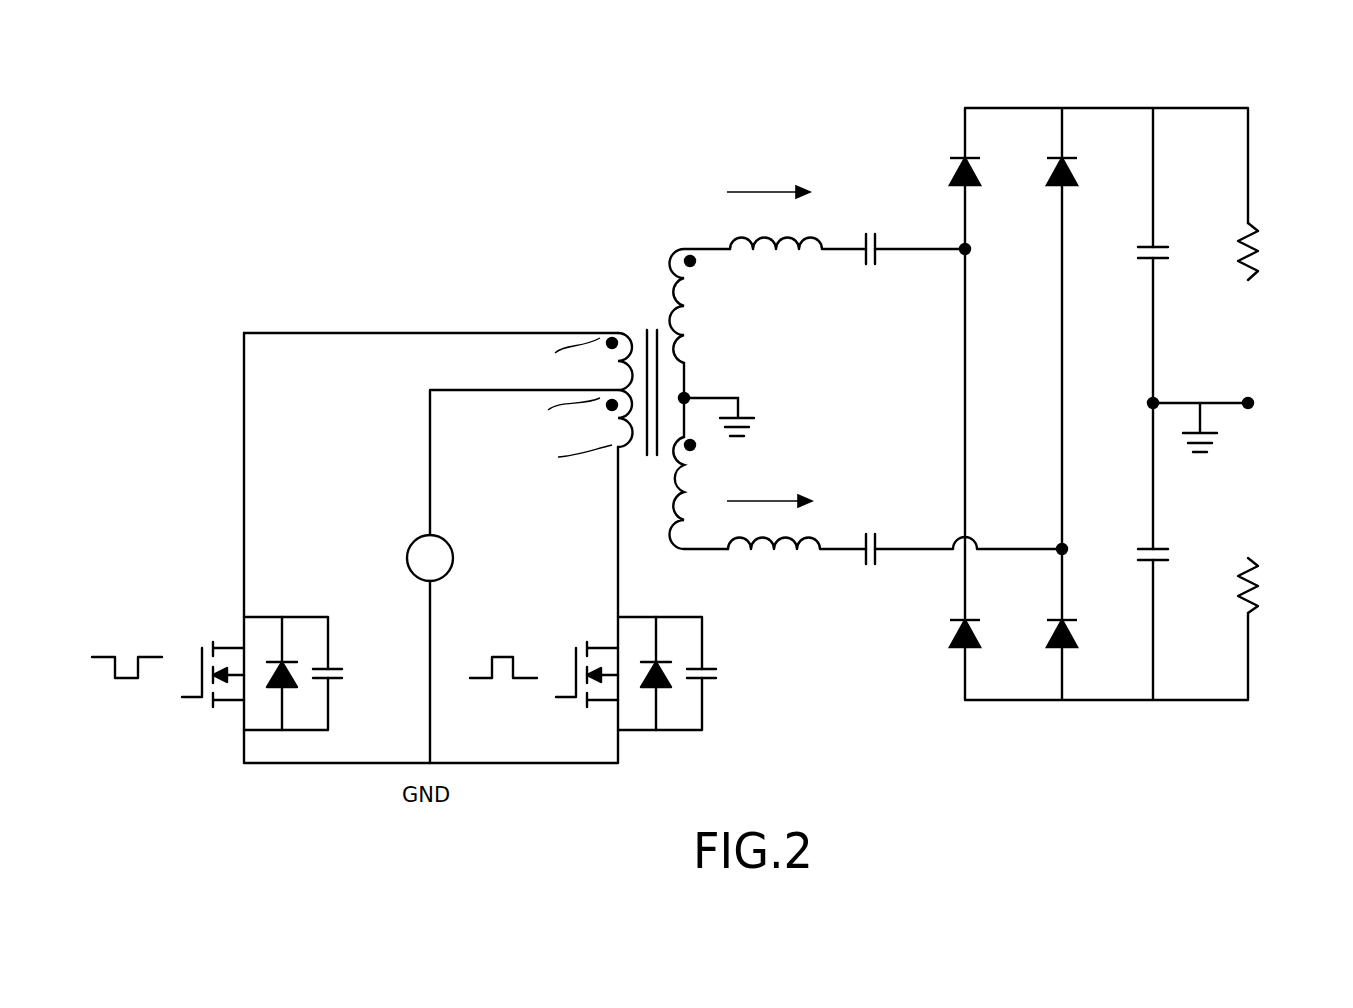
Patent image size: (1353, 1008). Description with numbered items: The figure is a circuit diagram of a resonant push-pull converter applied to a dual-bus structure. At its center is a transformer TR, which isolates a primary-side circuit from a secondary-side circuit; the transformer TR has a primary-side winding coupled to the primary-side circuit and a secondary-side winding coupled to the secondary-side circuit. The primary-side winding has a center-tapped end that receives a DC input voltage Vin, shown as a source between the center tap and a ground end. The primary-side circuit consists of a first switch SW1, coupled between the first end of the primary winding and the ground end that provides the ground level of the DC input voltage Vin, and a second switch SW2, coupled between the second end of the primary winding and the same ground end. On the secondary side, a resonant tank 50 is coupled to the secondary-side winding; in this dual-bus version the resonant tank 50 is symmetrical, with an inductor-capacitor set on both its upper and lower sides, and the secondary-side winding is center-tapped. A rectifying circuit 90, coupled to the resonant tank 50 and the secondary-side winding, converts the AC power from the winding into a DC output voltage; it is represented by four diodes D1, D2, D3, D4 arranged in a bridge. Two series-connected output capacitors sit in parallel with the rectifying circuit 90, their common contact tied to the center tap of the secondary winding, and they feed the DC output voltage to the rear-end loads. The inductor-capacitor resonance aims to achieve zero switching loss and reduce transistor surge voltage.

The resonant tank 50 is at (840, 156).
The rectifying circuit 90 is at (1115, 479).
The transformer TR is at (652, 290).
The first switch SW1 is at (217, 669).
The second switch SW2 is at (593, 669).
The DC input voltage Vin is at (408, 552).
The diode D1 is at (949, 153).
The diode D2 is at (949, 618).
The diode D3 is at (1046, 153).
The diode D4 is at (1046, 618).